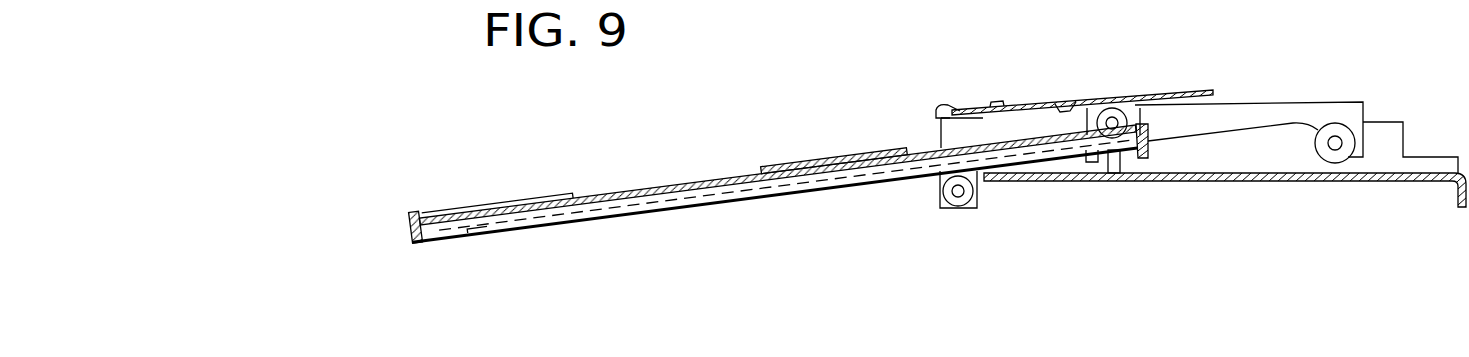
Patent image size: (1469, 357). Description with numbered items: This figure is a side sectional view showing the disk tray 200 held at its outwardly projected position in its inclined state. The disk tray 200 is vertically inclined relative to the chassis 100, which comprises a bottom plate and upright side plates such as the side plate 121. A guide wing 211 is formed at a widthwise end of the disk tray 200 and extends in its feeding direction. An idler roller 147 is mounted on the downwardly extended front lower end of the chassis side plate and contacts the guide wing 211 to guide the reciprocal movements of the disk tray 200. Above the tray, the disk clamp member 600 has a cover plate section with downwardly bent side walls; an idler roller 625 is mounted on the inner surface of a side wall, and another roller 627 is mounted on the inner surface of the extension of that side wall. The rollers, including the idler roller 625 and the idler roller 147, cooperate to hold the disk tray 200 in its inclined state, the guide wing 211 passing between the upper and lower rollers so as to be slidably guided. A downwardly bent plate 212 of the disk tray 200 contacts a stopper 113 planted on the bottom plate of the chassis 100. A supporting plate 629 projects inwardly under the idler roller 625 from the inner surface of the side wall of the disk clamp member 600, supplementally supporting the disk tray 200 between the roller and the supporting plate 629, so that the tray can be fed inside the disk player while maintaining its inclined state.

The chassis 100 is at (1218, 188).
The stopper 113 is at (1117, 168).
The side plate 121 is at (1385, 135).
The idler roller 147 is at (958, 207).
The disk tray 200 is at (623, 188).
The guide wing 211 is at (568, 222).
The downwardly bent plate 212 is at (1149, 150).
The disk clamp member 600 is at (1240, 106).
The idler roller 625 is at (1128, 124).
The roller 627 is at (1338, 162).
The supporting plate 629 is at (1098, 163).